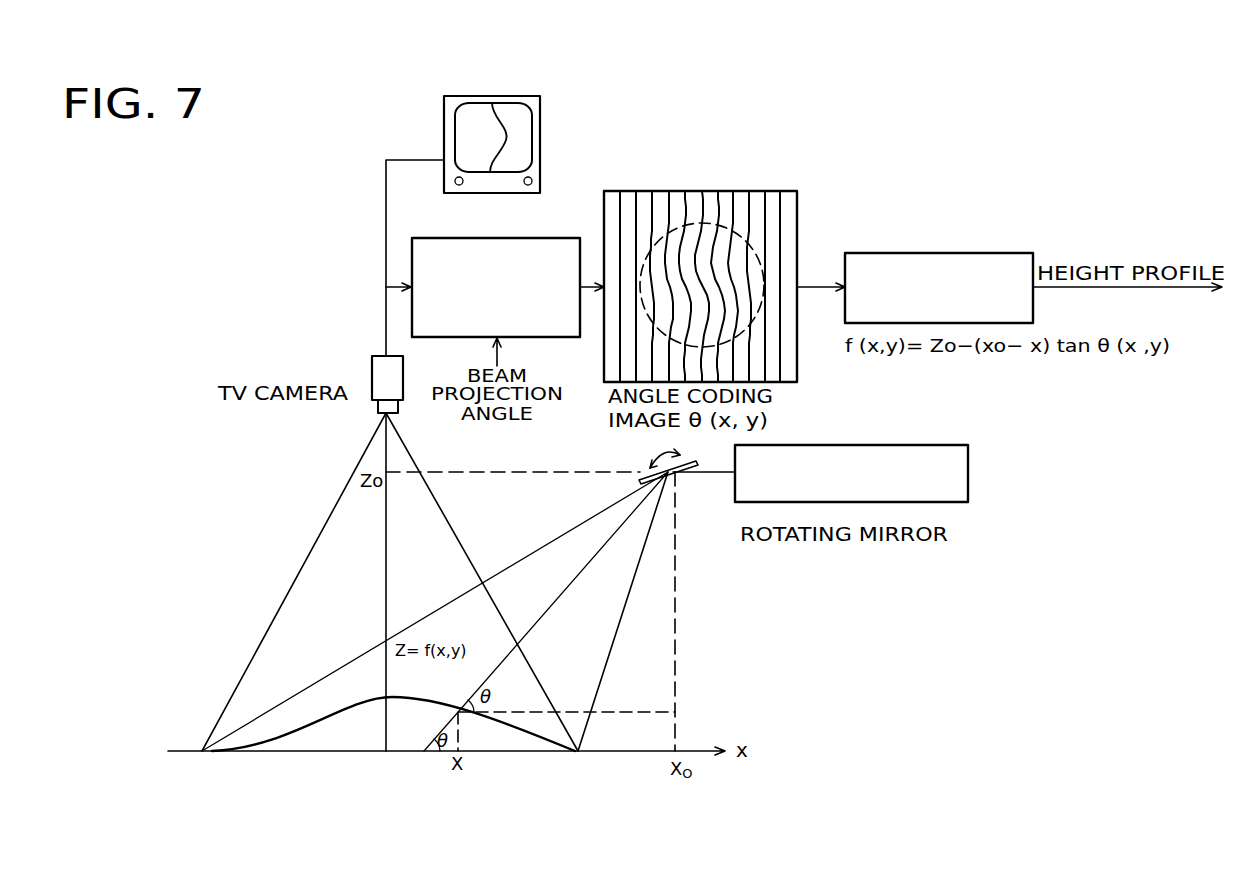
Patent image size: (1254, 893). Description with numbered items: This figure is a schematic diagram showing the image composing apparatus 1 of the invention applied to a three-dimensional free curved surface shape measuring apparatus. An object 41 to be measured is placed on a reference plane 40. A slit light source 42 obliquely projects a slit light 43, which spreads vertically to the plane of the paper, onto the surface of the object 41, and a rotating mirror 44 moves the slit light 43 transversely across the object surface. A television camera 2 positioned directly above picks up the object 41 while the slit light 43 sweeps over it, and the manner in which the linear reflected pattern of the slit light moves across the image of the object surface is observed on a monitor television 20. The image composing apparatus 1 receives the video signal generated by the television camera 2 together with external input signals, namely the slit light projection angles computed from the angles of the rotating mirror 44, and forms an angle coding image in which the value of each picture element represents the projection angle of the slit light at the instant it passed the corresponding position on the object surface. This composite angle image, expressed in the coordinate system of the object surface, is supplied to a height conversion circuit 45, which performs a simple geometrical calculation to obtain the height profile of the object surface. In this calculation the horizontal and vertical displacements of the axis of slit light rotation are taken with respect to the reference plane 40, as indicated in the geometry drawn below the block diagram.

The image composing apparatus 1 is at (566, 238).
The television camera 2 is at (372, 375).
The monitor television 20 is at (540, 117).
The reference plane 40 is at (379, 729).
The object to be measured 41 is at (333, 712).
The slit light source 42 is at (968, 470).
The slit light 43 is at (598, 551).
The rotating mirror 44 is at (700, 466).
The height conversion circuit 45 is at (948, 253).